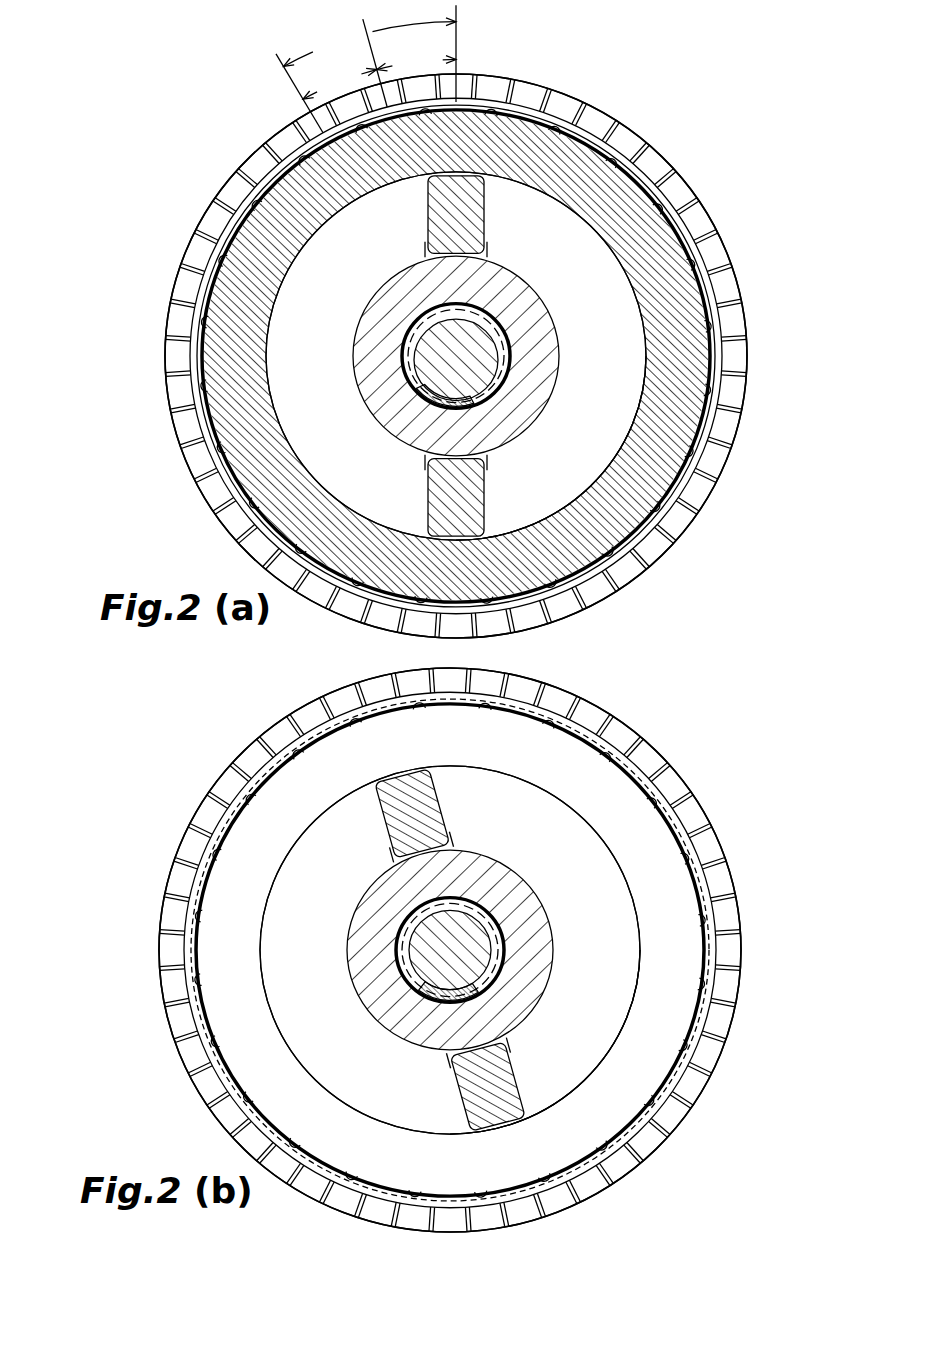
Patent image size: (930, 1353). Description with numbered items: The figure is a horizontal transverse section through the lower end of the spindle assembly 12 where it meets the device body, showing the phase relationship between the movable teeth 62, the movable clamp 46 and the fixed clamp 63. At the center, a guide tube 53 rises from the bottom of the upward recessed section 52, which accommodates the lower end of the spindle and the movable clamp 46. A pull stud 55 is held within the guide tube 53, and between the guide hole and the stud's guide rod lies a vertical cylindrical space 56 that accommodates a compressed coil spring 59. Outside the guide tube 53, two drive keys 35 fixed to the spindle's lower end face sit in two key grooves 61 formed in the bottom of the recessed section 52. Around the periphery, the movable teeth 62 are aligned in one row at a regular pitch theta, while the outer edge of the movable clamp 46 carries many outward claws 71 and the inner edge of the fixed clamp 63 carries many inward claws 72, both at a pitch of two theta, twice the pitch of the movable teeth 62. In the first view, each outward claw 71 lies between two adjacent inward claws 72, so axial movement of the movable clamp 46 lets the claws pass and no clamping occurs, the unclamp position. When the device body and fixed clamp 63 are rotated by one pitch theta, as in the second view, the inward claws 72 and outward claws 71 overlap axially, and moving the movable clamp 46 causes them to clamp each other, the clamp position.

In FIG. 2A, the motor 12 is at (140, 197).
In FIG. 2B, the motor 12 is at (140, 793).
In FIG. 2A, the drive key 35 is at (430, 208).
In FIG. 2B, the drive key 35 is at (398, 832).
In FIG. 2A, the movable clamp 46 is at (600, 465).
In FIG. 2B, the movable clamp 46 is at (620, 1017).
In FIG. 2A, the recessed section 52 is at (297, 372).
In FIG. 2B, the recessed section 52 is at (291, 967).
In FIG. 2A, the guide tube 53 is at (542, 373).
In FIG. 2B, the guide tube 53 is at (542, 966).
In FIG. 2A, the pull stud 55 is at (455, 330).
In FIG. 2B, the pull stud 55 is at (452, 925).
In FIG. 2A, the cylindrical space 56 is at (502, 328).
In FIG. 2B, the cylindrical space 56 is at (502, 925).
In FIG. 2A, the compressed coil spring 59 is at (418, 405).
In FIG. 2B, the compressed coil spring 59 is at (425, 1000).
In FIG. 2A, the key groove 61 is at (486, 240).
In FIG. 2B, the key groove 61 is at (448, 830).
In FIG. 2A, the movable teeth 62 is at (700, 220).
In FIG. 2B, the movable teeth 62 is at (700, 815).
In FIG. 2A, the fixed clamp 63 is at (668, 228).
In FIG. 2B, the fixed clamp 63 is at (660, 828).
In FIG. 2A, the outward claw 71 is at (256, 172).
In FIG. 2B, the outward claw 71 is at (252, 767).
In FIG. 2A, the inward claw 72 is at (235, 235).
In FIG. 2B, the inward claw 72 is at (384, 708).